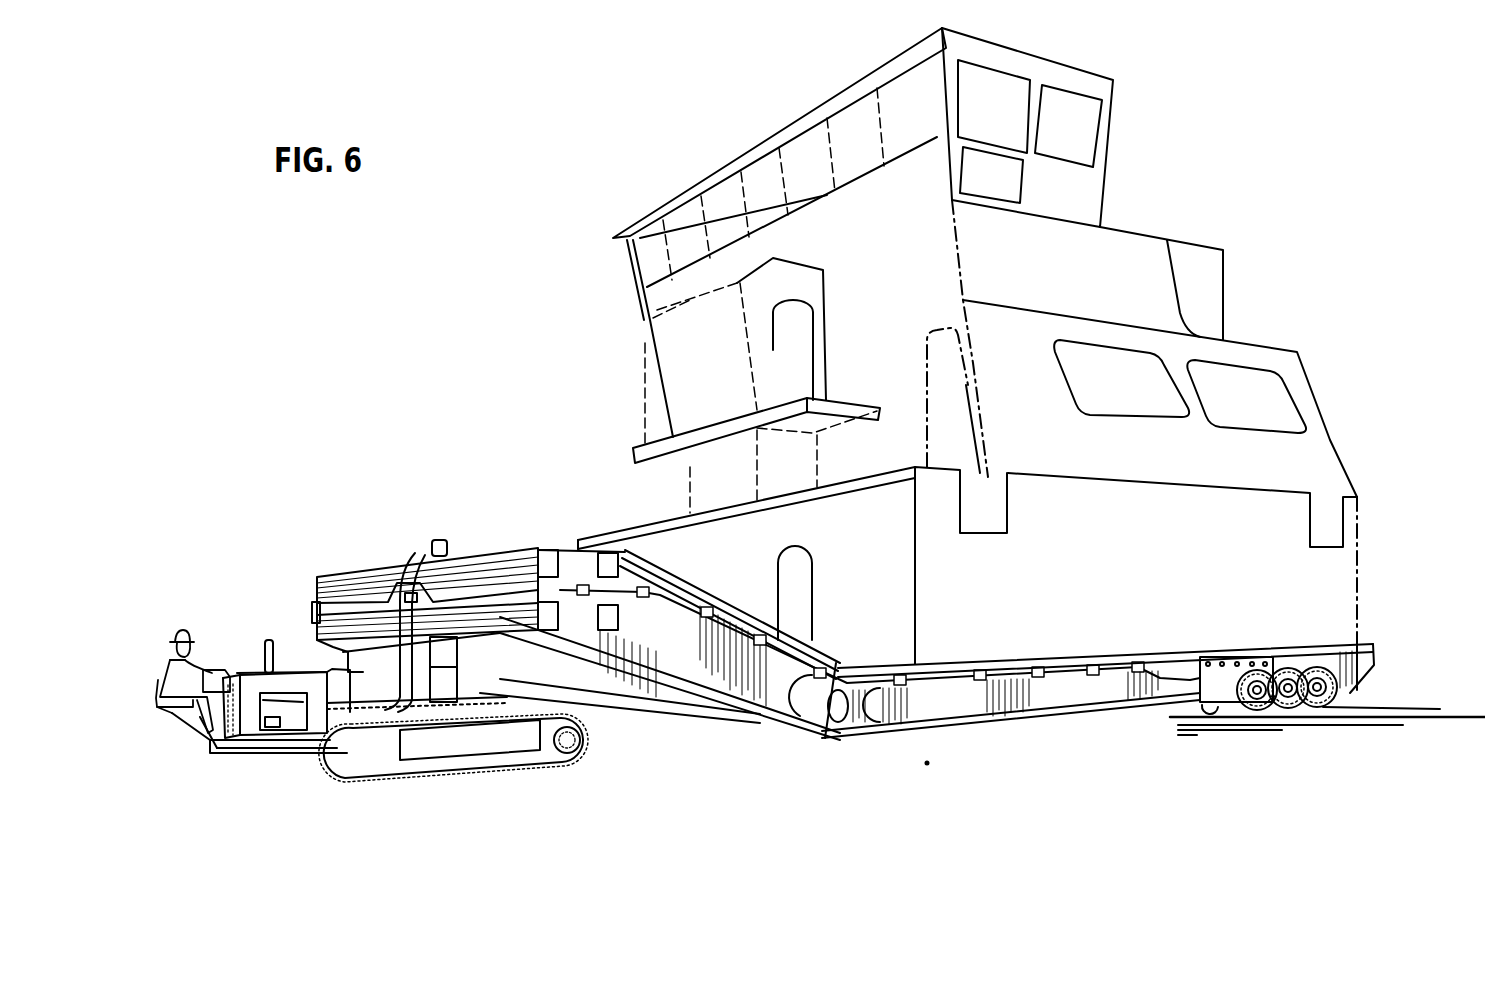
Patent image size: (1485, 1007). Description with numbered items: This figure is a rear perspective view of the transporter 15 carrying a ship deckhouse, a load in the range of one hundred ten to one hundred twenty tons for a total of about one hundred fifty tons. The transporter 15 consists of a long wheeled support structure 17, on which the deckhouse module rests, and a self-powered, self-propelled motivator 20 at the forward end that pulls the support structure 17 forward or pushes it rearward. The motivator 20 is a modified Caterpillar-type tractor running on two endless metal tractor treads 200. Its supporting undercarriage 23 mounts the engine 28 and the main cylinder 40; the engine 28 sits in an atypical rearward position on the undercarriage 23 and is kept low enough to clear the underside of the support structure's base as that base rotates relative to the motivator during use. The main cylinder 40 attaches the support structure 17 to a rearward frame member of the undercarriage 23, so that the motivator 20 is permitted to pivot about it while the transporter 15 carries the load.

The transporter 15 is at (375, 541).
The support structure 17 is at (773, 732).
The motivator 20 is at (235, 657).
The undercarriage 23 is at (302, 775).
The engine 28 is at (251, 727).
The tractor treads 200 is at (451, 778).
The main cylinder 40 is at (513, 703).